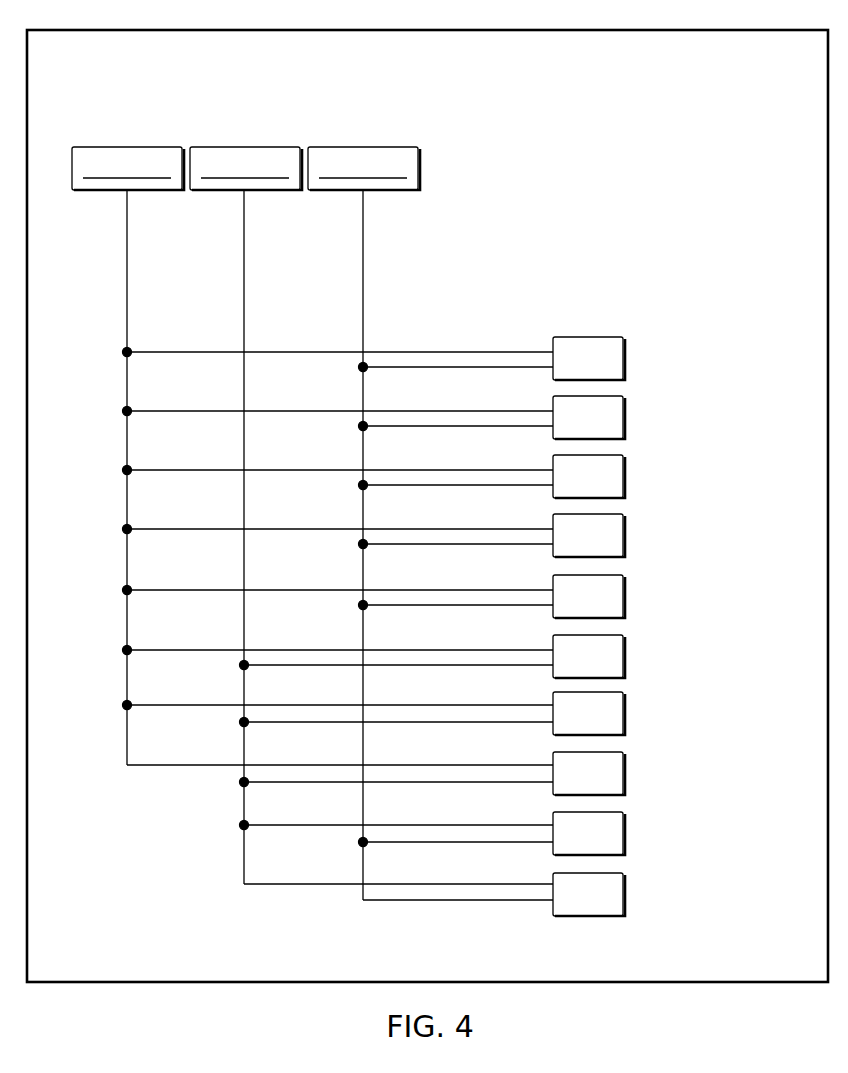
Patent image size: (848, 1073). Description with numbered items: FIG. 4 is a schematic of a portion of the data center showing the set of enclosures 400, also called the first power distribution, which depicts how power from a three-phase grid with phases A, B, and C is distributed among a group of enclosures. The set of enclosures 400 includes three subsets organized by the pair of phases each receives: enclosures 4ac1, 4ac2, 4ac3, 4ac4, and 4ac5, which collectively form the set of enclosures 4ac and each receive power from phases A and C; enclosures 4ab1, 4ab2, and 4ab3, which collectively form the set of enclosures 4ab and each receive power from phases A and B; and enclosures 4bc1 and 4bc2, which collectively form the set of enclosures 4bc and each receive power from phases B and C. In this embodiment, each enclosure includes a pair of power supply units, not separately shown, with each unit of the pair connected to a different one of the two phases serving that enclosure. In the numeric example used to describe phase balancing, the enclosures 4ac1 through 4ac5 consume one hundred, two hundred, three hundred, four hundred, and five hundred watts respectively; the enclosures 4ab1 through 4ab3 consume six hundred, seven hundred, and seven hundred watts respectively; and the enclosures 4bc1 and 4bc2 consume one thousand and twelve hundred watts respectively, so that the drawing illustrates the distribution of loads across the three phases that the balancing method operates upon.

The set of enclosures 400 is at (790, 84).
The enclosure 4ac1 is at (613, 372).
The enclosure 4ac2 is at (613, 431).
The enclosure 4ac3 is at (613, 490).
The enclosure 4ac4 is at (613, 549).
The enclosure 4ac5 is at (374, 596).
The enclosure 4ab1 is at (613, 670).
The enclosure 4ab2 is at (613, 727).
The enclosure 4ab3 is at (376, 773).
The enclosure 4bc1 is at (613, 847).
The enclosure 4bc2 is at (434, 894).
The set of enclosures 4ac is at (439, 478).
The set of enclosures 4ab is at (430, 716).
The set of enclosures 4bc is at (484, 866).